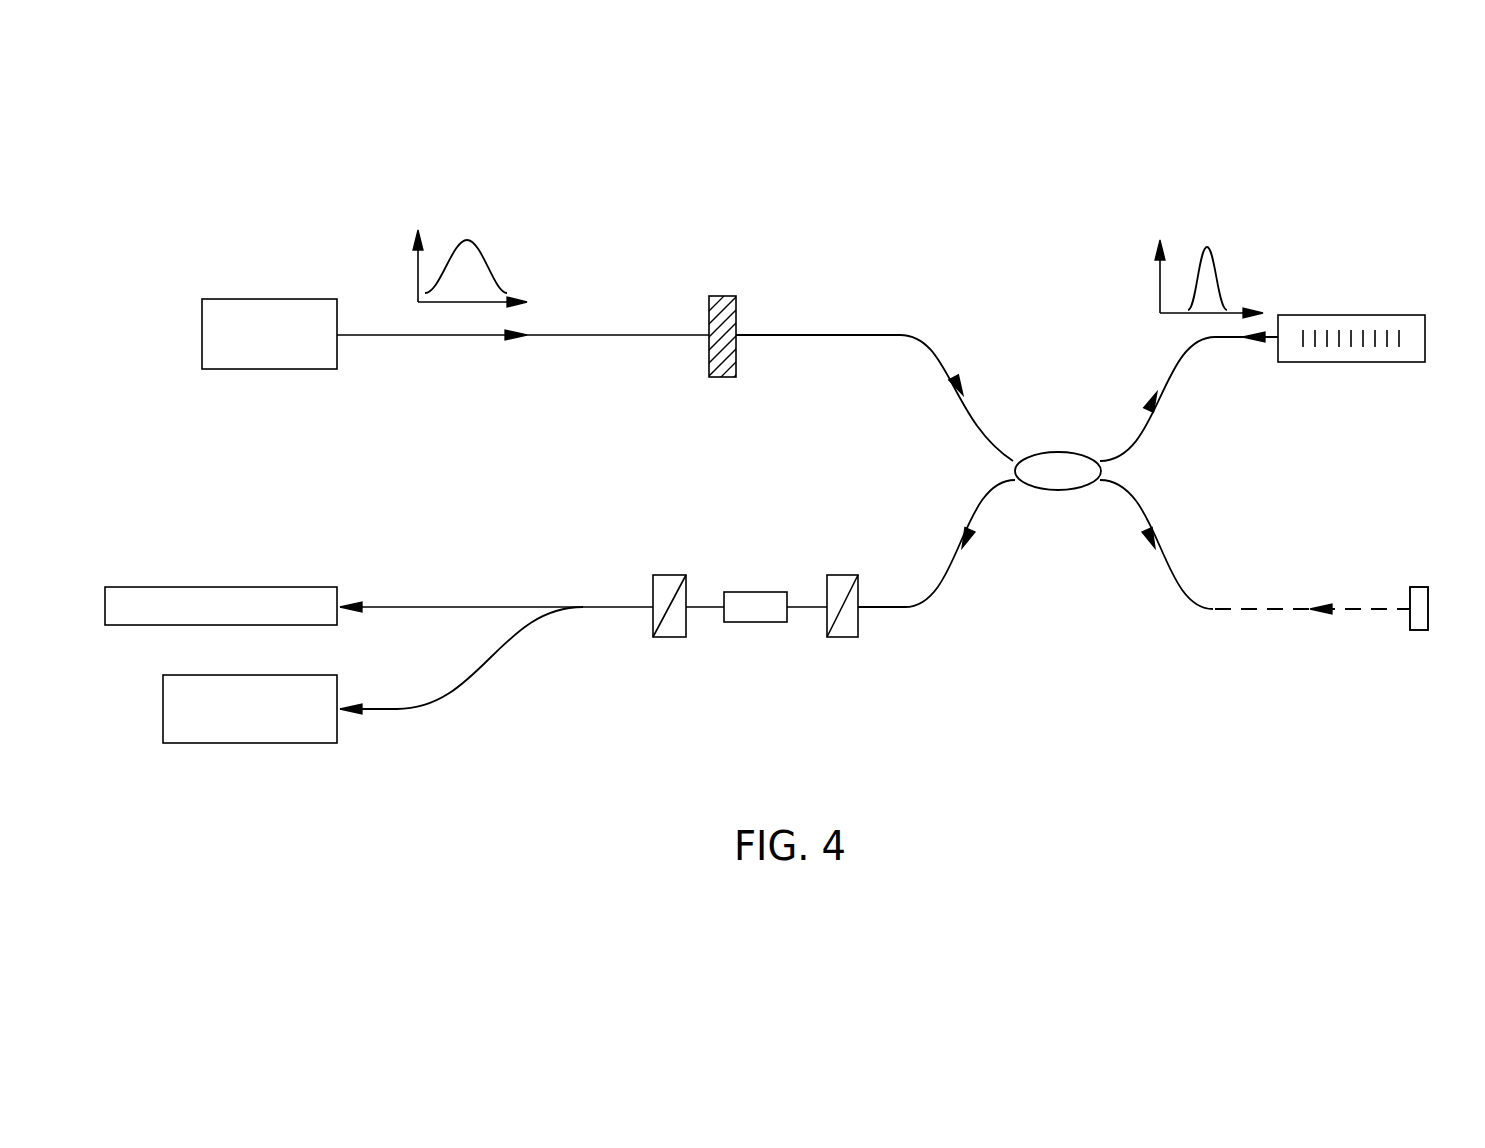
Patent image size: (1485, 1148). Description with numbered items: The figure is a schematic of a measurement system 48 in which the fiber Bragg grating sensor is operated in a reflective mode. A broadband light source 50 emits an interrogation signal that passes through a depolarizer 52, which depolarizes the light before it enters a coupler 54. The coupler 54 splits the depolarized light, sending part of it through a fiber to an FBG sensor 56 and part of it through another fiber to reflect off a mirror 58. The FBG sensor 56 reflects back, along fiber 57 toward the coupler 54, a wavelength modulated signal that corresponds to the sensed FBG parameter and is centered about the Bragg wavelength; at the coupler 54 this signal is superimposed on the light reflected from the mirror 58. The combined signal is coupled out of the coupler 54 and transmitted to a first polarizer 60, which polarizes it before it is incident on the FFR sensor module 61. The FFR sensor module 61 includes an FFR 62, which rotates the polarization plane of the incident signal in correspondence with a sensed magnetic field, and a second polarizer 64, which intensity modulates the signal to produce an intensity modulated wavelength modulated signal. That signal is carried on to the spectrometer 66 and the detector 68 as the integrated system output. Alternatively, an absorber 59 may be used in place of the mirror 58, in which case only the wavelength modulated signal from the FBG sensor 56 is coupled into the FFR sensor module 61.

The measurement system 48 is at (1362, 158).
The broadband light source 50 is at (270, 299).
The depolarizer 52 is at (722, 296).
The coupler 54 is at (1058, 452).
The FBG sensor 56 is at (1352, 315).
The fiber 57 is at (1350, 609).
The mirror 58 is at (1418, 630).
The absorber 59 is at (1419, 608).
The first polarizer 60 is at (840, 575).
The FFR sensor module 61 is at (655, 645).
The FFR 62 is at (755, 592).
The second polarizer 64 is at (668, 575).
The spectrometer 66 is at (222, 587).
The detector 68 is at (250, 743).